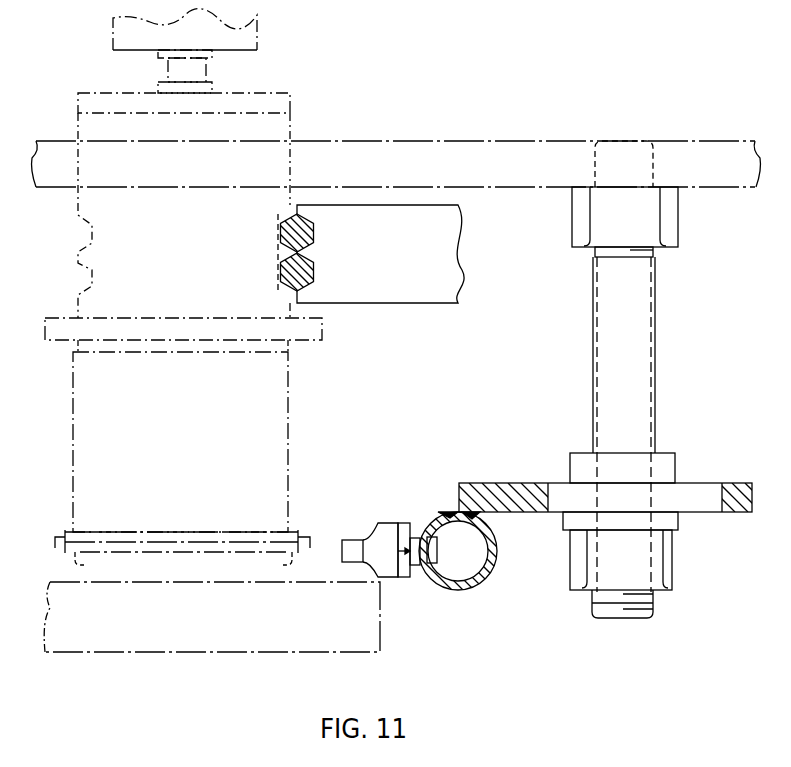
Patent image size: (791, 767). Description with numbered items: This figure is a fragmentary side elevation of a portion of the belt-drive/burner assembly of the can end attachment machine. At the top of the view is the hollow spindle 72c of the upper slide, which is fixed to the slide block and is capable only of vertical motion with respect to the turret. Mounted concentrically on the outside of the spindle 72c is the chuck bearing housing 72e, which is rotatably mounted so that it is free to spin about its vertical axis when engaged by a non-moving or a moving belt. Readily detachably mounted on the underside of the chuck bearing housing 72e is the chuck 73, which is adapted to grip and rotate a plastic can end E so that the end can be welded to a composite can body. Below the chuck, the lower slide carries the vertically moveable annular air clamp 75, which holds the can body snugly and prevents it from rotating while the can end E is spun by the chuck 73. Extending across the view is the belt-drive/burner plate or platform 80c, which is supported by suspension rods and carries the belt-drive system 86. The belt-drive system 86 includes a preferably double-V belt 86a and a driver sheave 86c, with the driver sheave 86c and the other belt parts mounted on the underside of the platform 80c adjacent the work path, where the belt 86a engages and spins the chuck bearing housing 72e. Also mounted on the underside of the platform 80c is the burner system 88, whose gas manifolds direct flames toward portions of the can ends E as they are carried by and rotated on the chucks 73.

The hollow spindle 72c is at (258, 30).
The chuck bearing housing 72e is at (291, 117).
The belt-drive/burner plate or platform 80c is at (499, 149).
The double-V belt 86a is at (280, 229).
The belt-drive system 86 is at (276, 258).
The driver sheave 86c is at (427, 303).
The chuck 73 is at (288, 421).
The can end E is at (312, 540).
The burner system 88 is at (472, 592).
The annular air clamp 75 is at (197, 640).